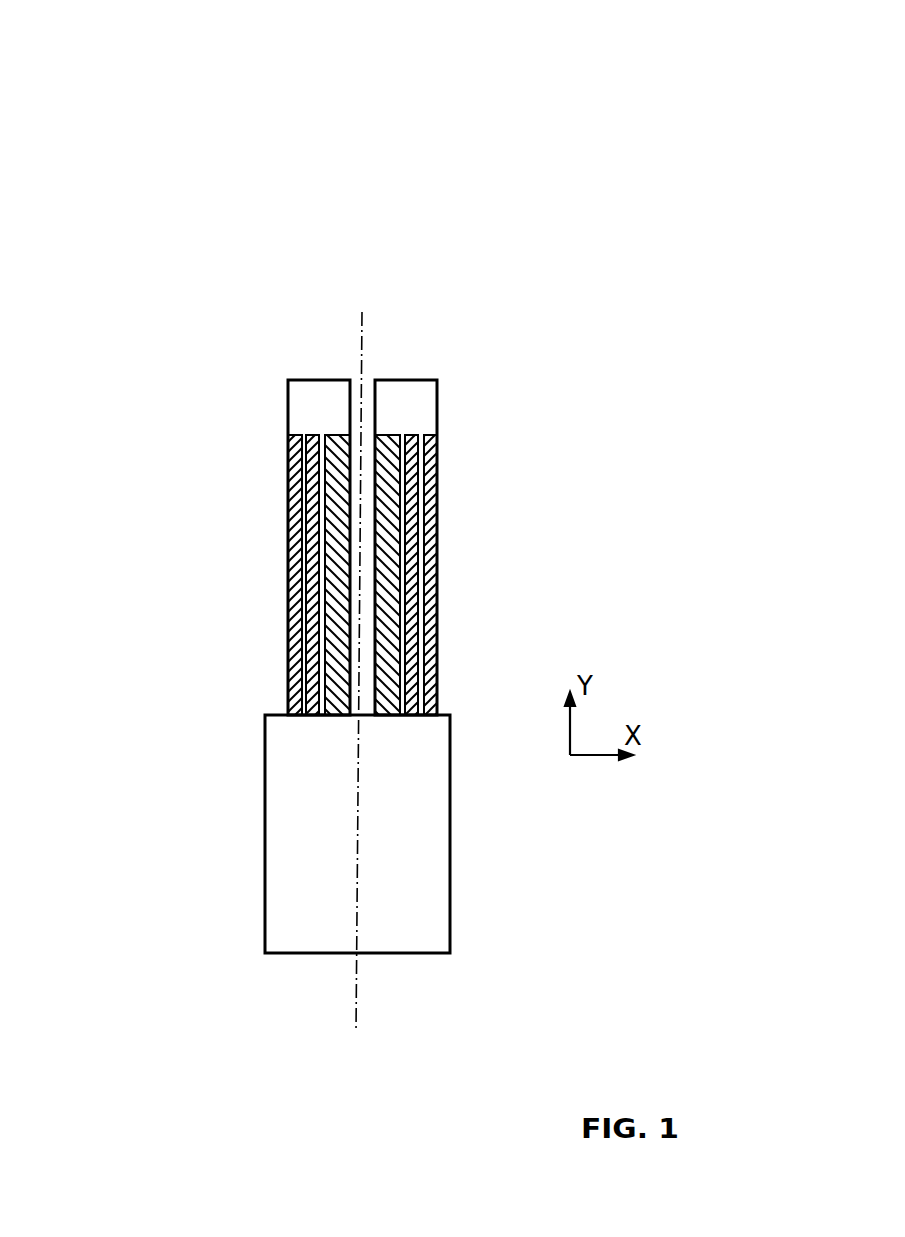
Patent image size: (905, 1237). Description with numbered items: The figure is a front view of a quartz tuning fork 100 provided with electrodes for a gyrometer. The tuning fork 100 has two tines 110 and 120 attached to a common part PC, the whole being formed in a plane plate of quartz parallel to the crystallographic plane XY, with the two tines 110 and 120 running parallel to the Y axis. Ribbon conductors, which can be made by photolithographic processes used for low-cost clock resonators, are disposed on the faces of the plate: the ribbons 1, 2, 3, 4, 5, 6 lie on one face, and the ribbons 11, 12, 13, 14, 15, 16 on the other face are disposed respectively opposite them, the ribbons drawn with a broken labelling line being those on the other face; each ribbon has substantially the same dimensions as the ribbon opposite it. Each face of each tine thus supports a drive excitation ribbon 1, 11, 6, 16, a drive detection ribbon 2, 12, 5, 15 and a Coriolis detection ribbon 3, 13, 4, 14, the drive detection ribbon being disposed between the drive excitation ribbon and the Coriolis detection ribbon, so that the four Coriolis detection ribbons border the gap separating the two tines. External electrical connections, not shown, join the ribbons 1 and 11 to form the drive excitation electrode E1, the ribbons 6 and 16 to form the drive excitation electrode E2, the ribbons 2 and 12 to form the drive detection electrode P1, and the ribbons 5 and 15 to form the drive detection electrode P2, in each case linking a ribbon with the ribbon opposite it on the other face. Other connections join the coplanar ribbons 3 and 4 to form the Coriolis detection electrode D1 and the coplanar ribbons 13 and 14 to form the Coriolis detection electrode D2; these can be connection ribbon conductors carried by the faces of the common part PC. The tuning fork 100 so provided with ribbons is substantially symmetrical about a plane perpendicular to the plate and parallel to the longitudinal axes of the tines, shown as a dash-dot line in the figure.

The tuning fork 100 is at (533, 100).
The tine 110 is at (210, 442).
The tine 120 is at (511, 442).
The drive excitation ribbon 1 is at (287, 503).
The drive excitation ribbon 11 is at (287, 492).
The drive detection ribbon 2 is at (297, 435).
The drive detection ribbon 12 is at (312, 435).
The Coriolis detection ribbon 3 is at (330, 435).
The Coriolis detection ribbon 13 is at (340, 435).
The Coriolis detection ribbon 4 is at (393, 435).
The Coriolis detection ribbon 14 is at (385, 435).
The drive detection ribbon 5 is at (412, 435).
The drive detection ribbon 15 is at (421, 435).
The drive excitation ribbon 6 is at (438, 492).
The drive excitation ribbon 16 is at (438, 505).
The common part PC is at (290, 830).
The drive excitation electrode E1 is at (193, 390).
The drive excitation electrode E2 is at (633, 393).
The drive detection electrode P1 is at (205, 230).
The drive detection electrode P2 is at (527, 230).
The Coriolis detection electrode D1 is at (418, 170).
The Coriolis detection electrode D2 is at (412, 288).